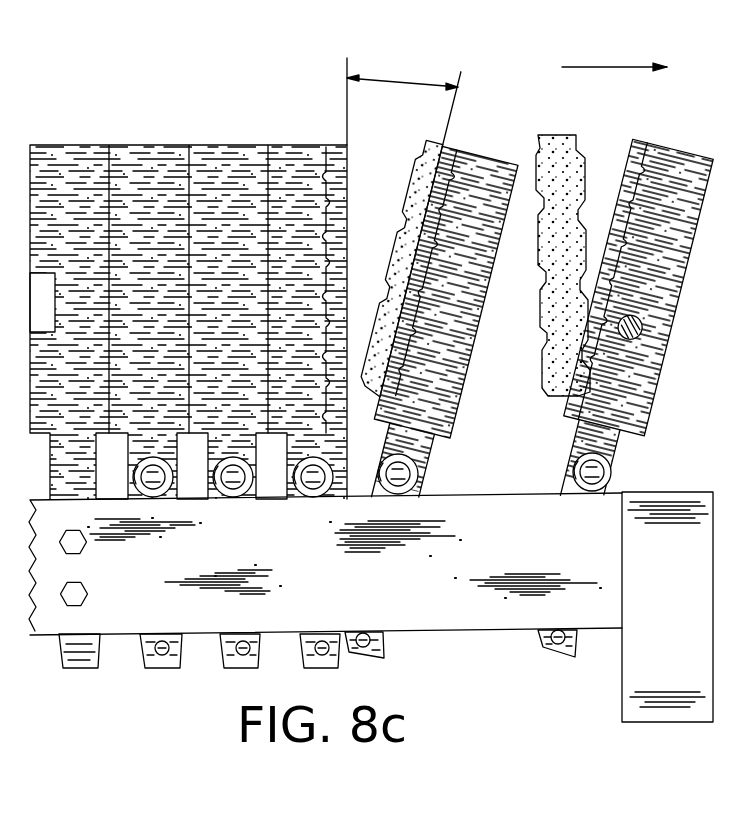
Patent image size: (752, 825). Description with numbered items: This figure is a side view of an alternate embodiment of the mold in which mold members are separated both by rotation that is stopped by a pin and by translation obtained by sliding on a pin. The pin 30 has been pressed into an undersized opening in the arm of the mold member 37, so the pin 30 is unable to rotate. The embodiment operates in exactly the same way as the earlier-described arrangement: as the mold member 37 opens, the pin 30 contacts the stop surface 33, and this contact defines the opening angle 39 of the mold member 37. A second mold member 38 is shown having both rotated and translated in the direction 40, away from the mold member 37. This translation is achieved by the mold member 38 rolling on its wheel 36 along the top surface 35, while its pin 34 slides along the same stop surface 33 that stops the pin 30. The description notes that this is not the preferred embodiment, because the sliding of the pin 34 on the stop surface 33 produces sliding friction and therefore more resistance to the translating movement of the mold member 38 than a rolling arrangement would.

The pin 30 is at (384, 654).
The stop surface 33 is at (477, 632).
The pin 34 is at (546, 647).
The top surface 35 is at (492, 494).
The wheel 36 is at (612, 455).
The mold member 37 is at (465, 149).
The mold member 38 is at (653, 145).
The opening angle 39 is at (402, 80).
The direction of translation 40 is at (615, 64).